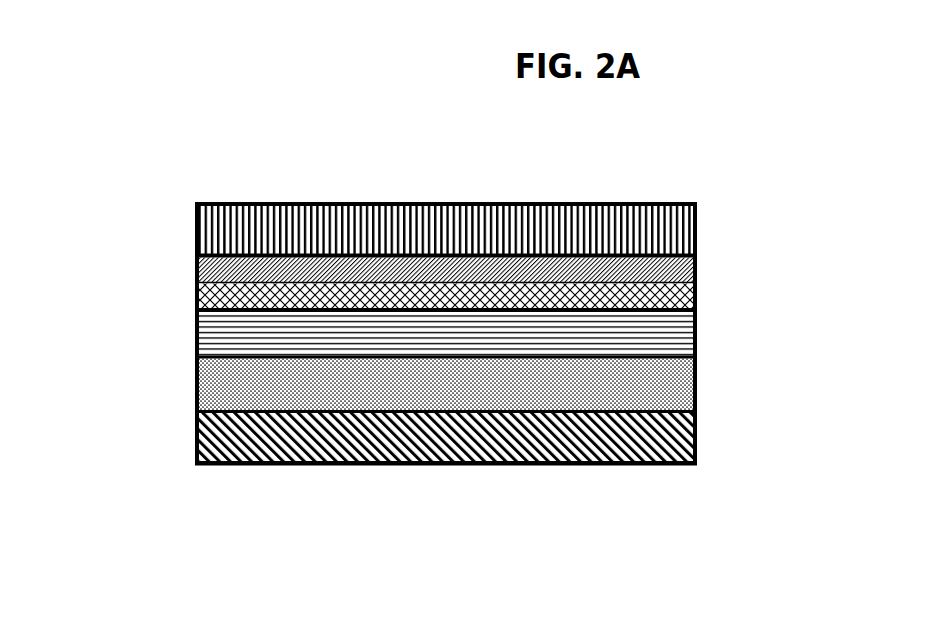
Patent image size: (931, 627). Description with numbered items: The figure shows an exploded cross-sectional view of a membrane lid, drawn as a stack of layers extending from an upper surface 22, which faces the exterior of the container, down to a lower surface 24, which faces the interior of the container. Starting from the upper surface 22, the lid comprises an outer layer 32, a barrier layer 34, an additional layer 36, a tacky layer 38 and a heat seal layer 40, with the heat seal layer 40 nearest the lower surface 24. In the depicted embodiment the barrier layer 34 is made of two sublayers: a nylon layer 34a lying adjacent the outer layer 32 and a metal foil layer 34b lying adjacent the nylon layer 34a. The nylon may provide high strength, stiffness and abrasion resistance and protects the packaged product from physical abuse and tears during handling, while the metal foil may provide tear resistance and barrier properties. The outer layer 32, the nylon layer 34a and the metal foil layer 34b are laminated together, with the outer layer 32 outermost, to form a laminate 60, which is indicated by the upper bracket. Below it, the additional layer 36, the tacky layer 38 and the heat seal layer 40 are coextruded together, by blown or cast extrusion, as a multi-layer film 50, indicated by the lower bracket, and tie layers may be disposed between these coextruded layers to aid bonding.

The upper surface 22 is at (497, 186).
The lower surface 24 is at (455, 483).
The outer layer 32 is at (697, 229).
The barrier layer 34 is at (434, 284).
The nylon layer 34a is at (195, 270).
The metal foil layer 34b is at (195, 297).
The additional layer 36 is at (697, 325).
The tacky layer 38 is at (697, 383).
The heat seal layer 40 is at (697, 435).
The multi-layer film 50 is at (195, 317).
The laminate 60 is at (187, 305).